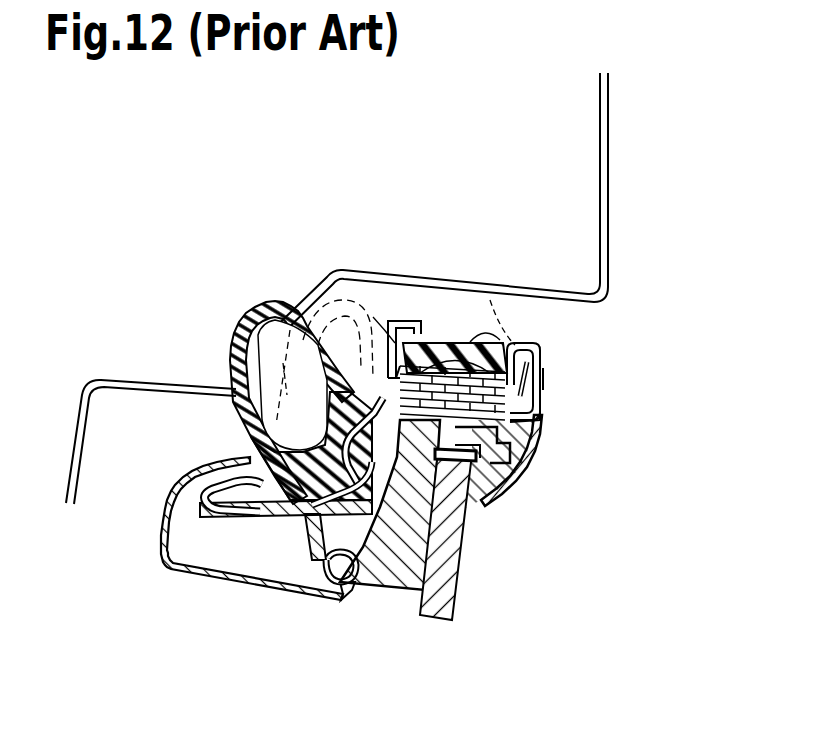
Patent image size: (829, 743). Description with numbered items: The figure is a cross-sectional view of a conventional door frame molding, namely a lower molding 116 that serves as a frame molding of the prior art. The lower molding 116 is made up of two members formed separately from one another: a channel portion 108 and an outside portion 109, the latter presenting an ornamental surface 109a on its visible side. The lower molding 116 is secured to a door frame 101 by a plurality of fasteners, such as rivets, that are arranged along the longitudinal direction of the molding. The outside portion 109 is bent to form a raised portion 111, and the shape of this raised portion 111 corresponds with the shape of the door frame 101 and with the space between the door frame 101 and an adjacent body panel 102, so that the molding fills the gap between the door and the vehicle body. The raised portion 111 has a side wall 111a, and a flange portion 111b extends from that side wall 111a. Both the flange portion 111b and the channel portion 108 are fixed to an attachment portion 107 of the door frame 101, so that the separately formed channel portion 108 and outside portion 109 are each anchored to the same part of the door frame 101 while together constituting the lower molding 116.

The door frame 101 is at (260, 582).
The body panel 102 is at (604, 204).
The attachment portion 107 is at (490, 487).
The channel portion 108 is at (383, 330).
The outside portion 109 is at (546, 361).
The ornamental surface 109a is at (548, 392).
The raised portion 111 is at (520, 343).
The side wall 111a is at (495, 340).
The flange portion 111b is at (478, 455).
The lower molding 116 is at (545, 378).